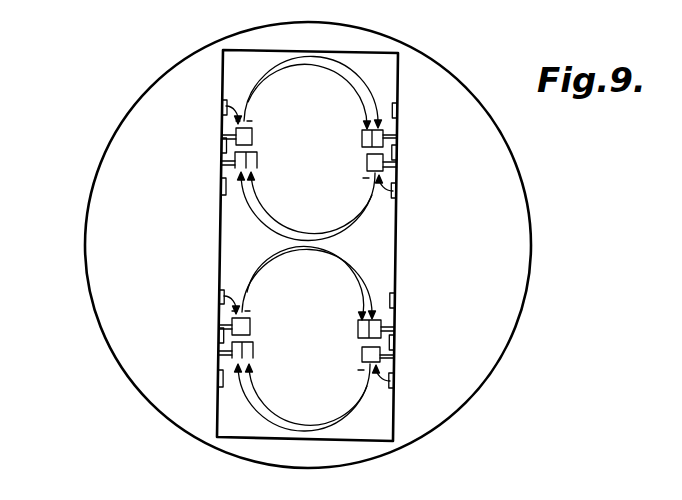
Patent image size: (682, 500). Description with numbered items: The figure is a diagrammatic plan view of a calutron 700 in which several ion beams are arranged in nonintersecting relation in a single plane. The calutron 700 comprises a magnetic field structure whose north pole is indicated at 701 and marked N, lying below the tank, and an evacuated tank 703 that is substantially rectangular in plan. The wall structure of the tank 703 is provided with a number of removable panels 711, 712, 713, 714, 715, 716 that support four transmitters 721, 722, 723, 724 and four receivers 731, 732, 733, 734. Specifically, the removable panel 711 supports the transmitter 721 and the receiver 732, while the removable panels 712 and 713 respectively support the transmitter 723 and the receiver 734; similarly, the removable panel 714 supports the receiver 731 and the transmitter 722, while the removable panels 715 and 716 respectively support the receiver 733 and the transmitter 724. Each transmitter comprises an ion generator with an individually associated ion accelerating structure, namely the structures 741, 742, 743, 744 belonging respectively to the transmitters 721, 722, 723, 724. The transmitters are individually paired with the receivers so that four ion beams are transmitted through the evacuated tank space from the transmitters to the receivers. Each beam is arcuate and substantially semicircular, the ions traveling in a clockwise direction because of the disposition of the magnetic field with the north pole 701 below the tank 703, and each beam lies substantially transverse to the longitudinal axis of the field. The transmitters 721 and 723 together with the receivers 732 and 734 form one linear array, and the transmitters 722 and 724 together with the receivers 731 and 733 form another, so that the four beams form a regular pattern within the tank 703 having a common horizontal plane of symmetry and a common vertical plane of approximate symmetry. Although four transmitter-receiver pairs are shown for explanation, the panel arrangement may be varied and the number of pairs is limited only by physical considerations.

The calutron 700 is at (150, 50).
The north magnetic pole 701 is at (100, 252).
The evacuated tank 703 is at (397, 51).
The removable panel 711 is at (222, 124).
The removable panel 712 is at (219, 300).
The removable panel 713 is at (219, 345).
The removable panel 714 is at (398, 143).
The removable panel 715 is at (382, 323).
The removable panel 716 is at (381, 357).
The transmitter 721 is at (222, 141).
The transmitter 722 is at (384, 163).
The transmitter 723 is at (232, 323).
The transmitter 724 is at (394, 340).
The receiver 731 is at (385, 131).
The receiver 732 is at (236, 170).
The receiver 733 is at (395, 299).
The receiver 734 is at (232, 360).
The ion accelerating structure 741 is at (225, 106).
The ion accelerating structure 742 is at (398, 192).
The ion accelerating structure 743 is at (222, 285).
The ion accelerating structure 744 is at (394, 381).
The north pole indication N is at (508, 247).